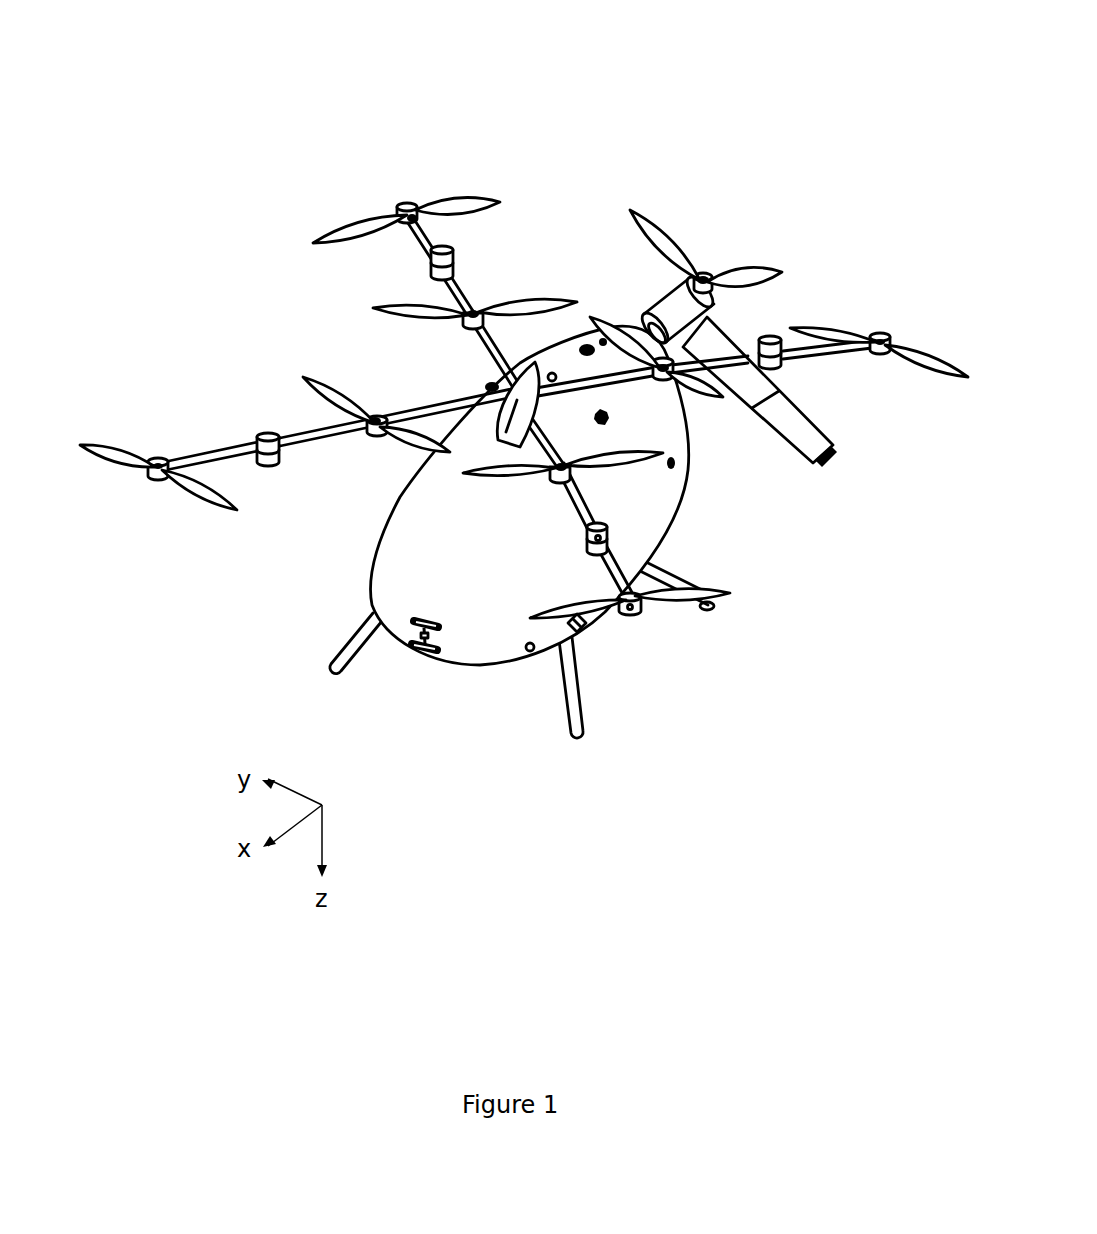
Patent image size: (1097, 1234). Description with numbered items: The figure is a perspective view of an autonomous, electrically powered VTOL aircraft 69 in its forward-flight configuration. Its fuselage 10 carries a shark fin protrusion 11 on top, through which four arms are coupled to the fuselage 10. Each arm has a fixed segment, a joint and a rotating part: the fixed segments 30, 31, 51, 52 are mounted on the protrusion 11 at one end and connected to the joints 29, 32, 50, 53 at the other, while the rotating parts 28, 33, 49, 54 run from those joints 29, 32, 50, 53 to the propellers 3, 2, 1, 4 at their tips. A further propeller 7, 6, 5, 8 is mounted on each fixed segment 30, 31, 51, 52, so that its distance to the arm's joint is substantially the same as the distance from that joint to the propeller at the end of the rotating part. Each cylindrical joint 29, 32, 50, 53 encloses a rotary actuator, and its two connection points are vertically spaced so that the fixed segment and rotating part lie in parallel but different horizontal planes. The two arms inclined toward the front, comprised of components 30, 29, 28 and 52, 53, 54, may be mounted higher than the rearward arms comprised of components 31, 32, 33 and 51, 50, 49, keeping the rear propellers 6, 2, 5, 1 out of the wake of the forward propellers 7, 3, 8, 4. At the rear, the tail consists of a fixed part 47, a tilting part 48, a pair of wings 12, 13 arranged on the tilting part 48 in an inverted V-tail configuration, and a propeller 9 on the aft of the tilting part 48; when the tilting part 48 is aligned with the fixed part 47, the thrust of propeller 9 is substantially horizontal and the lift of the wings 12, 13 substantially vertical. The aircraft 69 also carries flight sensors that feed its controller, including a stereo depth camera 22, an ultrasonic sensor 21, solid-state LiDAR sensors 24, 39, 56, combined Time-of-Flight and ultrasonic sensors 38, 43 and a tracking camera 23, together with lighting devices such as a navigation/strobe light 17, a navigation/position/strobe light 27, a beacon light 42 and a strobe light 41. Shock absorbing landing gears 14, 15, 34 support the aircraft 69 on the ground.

The VTOL aircraft 69 is at (698, 145).
The propeller 1 is at (452, 205).
The propeller 2 is at (926, 355).
The propeller 3 is at (673, 606).
The propeller 4 is at (118, 464).
The propeller 5 is at (395, 305).
The propeller 6 is at (702, 380).
The propeller 7 is at (513, 471).
The propeller 8 is at (327, 387).
The propeller 9 is at (730, 268).
The fuselage 10 is at (480, 603).
The shark fin protrusion 11 is at (519, 391).
The wing 12 is at (628, 322).
The wing 13 is at (800, 432).
The shock absorbing landing gear 14 is at (333, 645).
The shock absorbing landing gear 15 is at (585, 722).
The navigation/strobe light 17 is at (585, 628).
The ultrasonic sensor 21 is at (530, 652).
The stereo depth camera 22 is at (417, 620).
The tracking camera 23 is at (427, 658).
The solid-state LiDAR sensor 24 is at (415, 628).
The navigation/position/strobe light 27 is at (826, 462).
The rotating part 28 is at (613, 575).
The joint 29 is at (584, 541).
The fixed segment 30 is at (584, 504).
The fixed segment 31 is at (748, 352).
The joint 32 is at (789, 360).
The rotating part 33 is at (832, 357).
The shock absorbing landing gear 34 is at (671, 572).
The combined Time-of-Flight and ultrasonic sensor 38 is at (673, 466).
The solid-state LiDAR sensor 39 is at (608, 418).
The strobe light 41 is at (552, 372).
The beacon light 42 is at (585, 345).
The combined Time-of-Flight and ultrasonic sensor 43 is at (604, 344).
The fixed part 47 is at (672, 333).
The tilting part 48 is at (677, 303).
The rotating part 49 is at (428, 242).
The joint 50 is at (444, 252).
The fixed segment 51 is at (459, 282).
The fixed segment 52 is at (303, 431).
The joint 53 is at (277, 458).
The rotating part 54 is at (208, 459).
The solid-state LiDAR sensor 56 is at (488, 387).